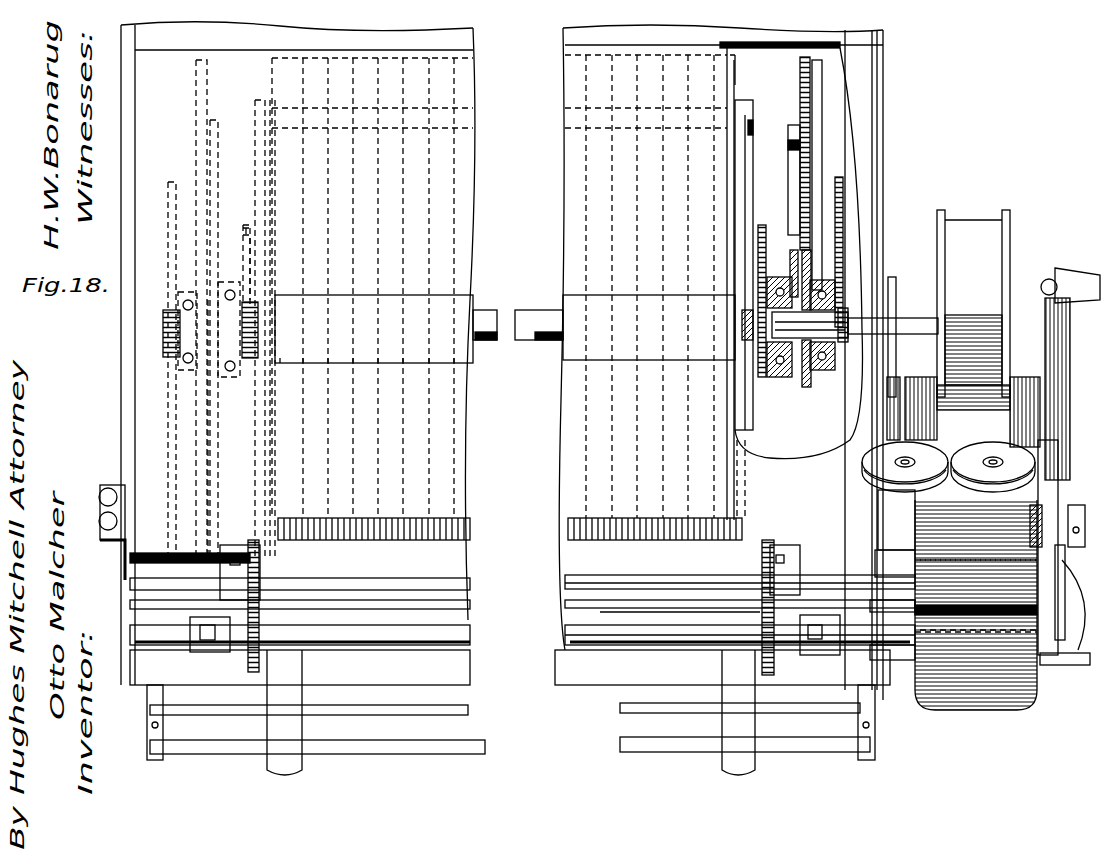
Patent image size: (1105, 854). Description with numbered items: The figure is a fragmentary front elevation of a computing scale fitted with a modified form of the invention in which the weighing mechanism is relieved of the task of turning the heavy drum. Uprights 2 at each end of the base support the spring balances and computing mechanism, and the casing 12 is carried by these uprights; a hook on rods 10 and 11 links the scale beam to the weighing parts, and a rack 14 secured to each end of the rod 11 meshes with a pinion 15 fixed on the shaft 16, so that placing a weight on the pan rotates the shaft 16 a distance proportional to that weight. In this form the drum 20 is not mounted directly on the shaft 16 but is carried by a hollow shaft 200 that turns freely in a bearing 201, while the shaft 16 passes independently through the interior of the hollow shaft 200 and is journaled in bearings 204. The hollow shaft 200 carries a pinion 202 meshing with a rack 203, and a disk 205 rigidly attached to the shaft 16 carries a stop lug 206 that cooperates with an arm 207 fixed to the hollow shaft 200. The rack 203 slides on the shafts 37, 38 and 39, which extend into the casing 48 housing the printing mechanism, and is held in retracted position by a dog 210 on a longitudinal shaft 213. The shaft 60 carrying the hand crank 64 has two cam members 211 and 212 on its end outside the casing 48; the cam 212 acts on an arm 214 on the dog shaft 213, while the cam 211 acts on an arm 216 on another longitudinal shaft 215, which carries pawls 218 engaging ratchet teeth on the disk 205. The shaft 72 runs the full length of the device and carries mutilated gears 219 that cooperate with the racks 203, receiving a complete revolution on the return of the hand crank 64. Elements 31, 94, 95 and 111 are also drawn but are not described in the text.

The upright 2 is at (725, 722).
The rod 10 is at (795, 752).
The rod 11 is at (740, 718).
The casing 12 is at (875, 78).
The rack 14 is at (175, 420).
The pinion 15 is at (170, 345).
The shaft 16 is at (495, 320).
The drum 20 is at (732, 85).
The bracket 31 is at (905, 550).
The shaft 37 is at (880, 575).
The shaft 38 is at (880, 616).
The shaft 39 is at (880, 650).
The casing 48 is at (935, 700).
The shaft 60 is at (1086, 518).
The hand crank 64 is at (1060, 385).
The shaft 72 is at (620, 578).
The disk 94 is at (988, 485).
The disk 95 is at (920, 455).
The spool 111 is at (990, 395).
The hollow shaft 200 is at (540, 345).
The bearing 201 is at (775, 285).
The pinion 202 is at (755, 325).
The rack 203 is at (246, 228).
The bearing 204 is at (850, 262).
The disk 205 is at (205, 100).
The stop lug 206 is at (218, 140).
The arm 207 is at (215, 190).
The dog 210 is at (225, 560).
The cam member 211 is at (1068, 480).
The cam member 212 is at (1035, 530).
The shaft 213 is at (820, 623).
The arm 214 is at (1045, 575).
The shaft 215 is at (615, 645).
The arm 216 is at (1082, 616).
The pawl 218 is at (195, 652).
The mutilated gear 219 is at (262, 658).